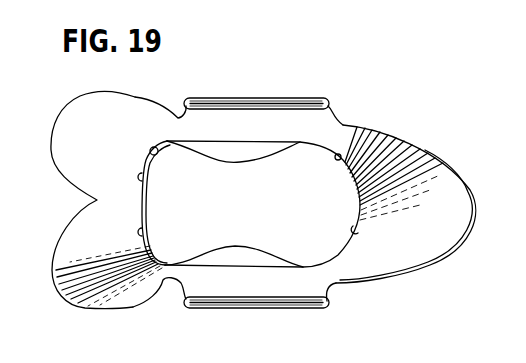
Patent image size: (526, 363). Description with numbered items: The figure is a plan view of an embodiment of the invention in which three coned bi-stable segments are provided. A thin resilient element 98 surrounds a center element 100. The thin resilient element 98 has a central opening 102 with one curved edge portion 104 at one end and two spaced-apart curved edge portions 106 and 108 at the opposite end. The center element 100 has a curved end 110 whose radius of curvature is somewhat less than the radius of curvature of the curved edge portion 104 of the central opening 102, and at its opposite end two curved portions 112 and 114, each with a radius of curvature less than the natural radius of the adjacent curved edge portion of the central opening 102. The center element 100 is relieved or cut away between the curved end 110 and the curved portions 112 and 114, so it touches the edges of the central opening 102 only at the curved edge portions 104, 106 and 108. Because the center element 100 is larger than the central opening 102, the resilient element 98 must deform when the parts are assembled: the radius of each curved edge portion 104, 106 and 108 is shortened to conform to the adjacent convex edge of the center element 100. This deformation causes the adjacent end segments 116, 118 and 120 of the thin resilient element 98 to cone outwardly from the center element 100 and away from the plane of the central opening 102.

The thin resilient element 98 is at (269, 204).
The center element 100 is at (263, 208).
The central opening 102 is at (244, 146).
The curved edge portion 104 is at (360, 129).
The curved edge portion 106 is at (145, 100).
The curved edge portion 108 is at (175, 298).
The curved end 110 is at (354, 229).
The curved portion 112 is at (145, 179).
The curved portion 114 is at (146, 236).
The end segment 116 is at (454, 177).
The end segment 118 is at (71, 114).
The end segment 120 is at (115, 290).